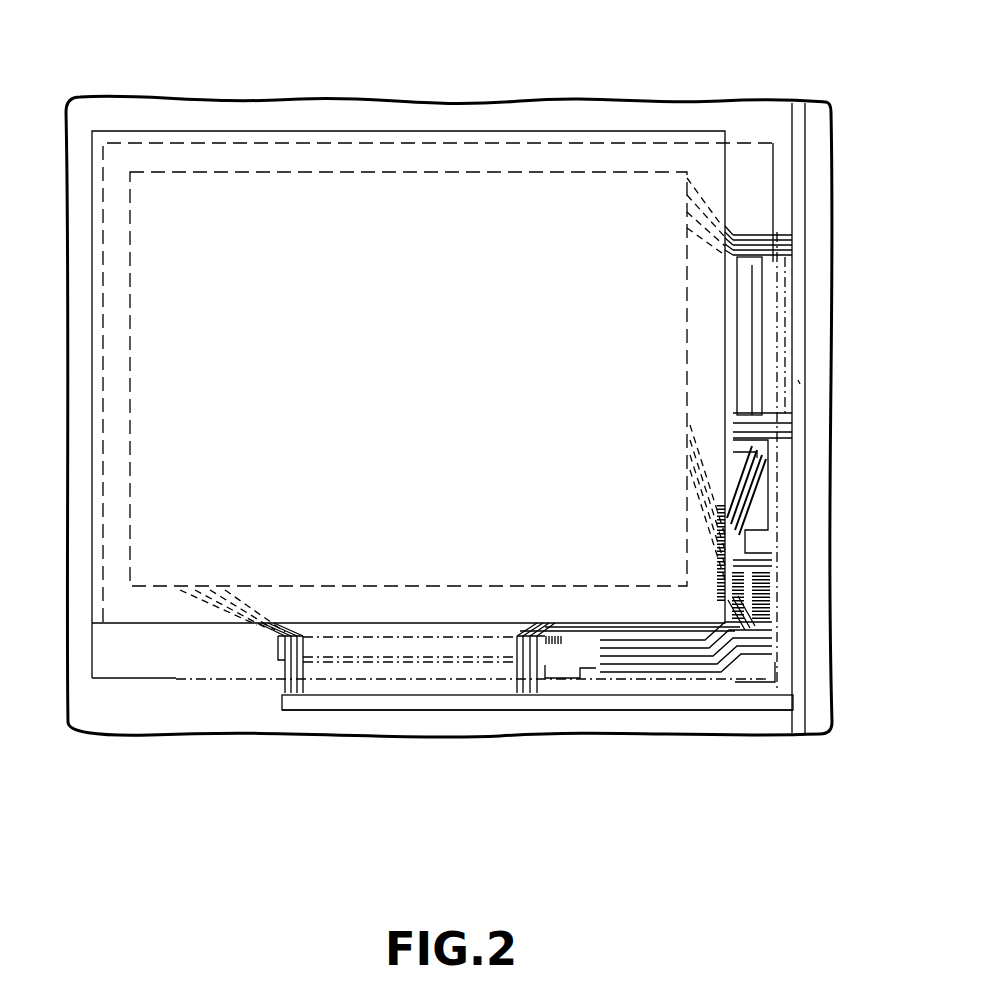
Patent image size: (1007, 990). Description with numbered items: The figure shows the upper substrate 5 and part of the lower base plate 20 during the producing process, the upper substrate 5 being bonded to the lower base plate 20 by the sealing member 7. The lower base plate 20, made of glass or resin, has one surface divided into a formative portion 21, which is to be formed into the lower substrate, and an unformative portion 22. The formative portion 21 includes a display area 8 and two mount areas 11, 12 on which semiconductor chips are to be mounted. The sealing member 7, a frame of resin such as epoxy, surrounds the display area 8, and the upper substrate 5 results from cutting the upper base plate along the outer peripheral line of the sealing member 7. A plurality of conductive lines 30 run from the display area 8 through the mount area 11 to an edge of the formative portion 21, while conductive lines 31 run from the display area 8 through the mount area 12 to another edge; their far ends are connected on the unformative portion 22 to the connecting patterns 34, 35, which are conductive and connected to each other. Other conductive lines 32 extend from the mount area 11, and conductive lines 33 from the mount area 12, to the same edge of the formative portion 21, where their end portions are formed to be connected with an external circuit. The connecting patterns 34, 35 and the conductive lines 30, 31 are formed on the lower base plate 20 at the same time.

The upper substrate 5 is at (247, 142).
The sealing member 7 is at (160, 155).
The display area 8 is at (403, 171).
The mount area 11 is at (405, 648).
The mount area 12 is at (745, 305).
The lower base plate 20 is at (597, 101).
The formative portion 21 is at (740, 118).
The unformative portion 22 is at (770, 108).
The conductive lines 30 is at (207, 598).
The conductive lines 31 is at (716, 210).
The conductive lines 32 is at (657, 655).
The conductive lines 33 is at (756, 512).
The connecting pattern 34 is at (500, 706).
The connecting pattern 35 is at (800, 382).